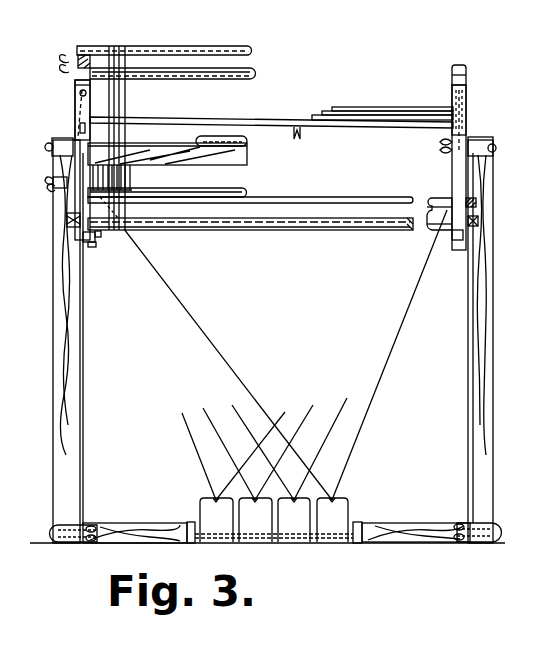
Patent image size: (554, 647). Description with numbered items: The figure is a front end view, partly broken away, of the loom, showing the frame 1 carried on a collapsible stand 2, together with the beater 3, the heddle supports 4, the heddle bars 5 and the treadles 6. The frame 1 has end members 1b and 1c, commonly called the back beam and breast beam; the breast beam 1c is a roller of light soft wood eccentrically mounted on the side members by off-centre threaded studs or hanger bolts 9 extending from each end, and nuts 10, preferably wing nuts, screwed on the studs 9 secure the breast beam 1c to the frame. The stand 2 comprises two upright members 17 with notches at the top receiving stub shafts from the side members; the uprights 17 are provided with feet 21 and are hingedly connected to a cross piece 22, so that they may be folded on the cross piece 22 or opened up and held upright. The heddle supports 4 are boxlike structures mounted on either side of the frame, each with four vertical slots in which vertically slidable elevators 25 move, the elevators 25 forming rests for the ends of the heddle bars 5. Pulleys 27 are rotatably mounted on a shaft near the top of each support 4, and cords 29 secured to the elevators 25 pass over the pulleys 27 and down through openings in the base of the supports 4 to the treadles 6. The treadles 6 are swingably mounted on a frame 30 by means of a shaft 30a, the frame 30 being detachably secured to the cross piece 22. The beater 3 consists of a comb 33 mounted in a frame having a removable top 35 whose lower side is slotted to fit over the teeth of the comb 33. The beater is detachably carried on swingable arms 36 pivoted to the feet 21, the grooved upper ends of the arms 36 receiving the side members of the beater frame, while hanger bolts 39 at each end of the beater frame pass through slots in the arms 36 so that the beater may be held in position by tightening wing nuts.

The frame 1 is at (73, 64).
The end member (back beam) 1b is at (200, 46).
The end member (breast beam) 1c is at (241, 230).
The stand 2 is at (55, 425).
The beater 3 is at (190, 162).
The heddle support 4 is at (75, 115).
The heddle bar 5 is at (404, 108).
The treadle 6 is at (340, 507).
The hanger bolt 9 is at (67, 222).
The nut 10 is at (67, 214).
The upright member 17 is at (53, 365).
The foot 21 is at (52, 520).
The cross piece 22 is at (125, 523).
The elevator 25 is at (467, 130).
The pulley 27 is at (467, 70).
The cord 29 is at (315, 410).
The frame (treadle frame) 30 is at (362, 523).
The shaft 30a is at (313, 544).
The comb 33 is at (132, 178).
The removable top 35 is at (247, 142).
The swingable arm 36 is at (83, 358).
The hanger bolt 39 is at (53, 183).